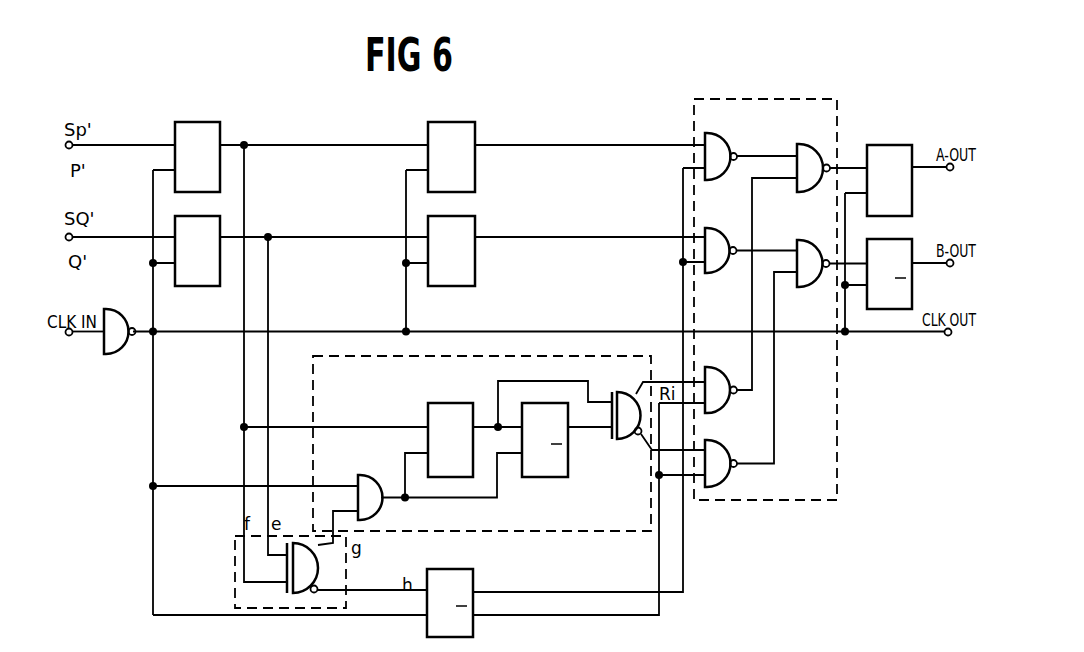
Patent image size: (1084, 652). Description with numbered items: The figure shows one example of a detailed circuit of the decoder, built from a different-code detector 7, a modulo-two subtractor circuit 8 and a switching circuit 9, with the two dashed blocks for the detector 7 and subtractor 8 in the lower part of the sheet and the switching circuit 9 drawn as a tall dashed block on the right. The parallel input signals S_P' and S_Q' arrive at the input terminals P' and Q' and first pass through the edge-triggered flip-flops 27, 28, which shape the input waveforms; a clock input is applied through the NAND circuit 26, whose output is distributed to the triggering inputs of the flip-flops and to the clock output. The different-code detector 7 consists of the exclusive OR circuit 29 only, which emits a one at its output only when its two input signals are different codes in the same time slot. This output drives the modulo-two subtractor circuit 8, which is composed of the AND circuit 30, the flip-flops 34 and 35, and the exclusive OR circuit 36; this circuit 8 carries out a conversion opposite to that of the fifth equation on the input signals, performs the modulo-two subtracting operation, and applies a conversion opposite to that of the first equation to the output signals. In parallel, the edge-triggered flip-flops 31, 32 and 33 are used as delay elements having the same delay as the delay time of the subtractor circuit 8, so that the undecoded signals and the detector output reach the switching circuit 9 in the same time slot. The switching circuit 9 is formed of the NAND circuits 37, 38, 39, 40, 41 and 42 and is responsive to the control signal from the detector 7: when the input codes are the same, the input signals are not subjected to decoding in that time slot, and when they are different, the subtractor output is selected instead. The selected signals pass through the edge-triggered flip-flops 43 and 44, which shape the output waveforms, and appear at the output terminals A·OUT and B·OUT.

The different-code detector 7 is at (235, 545).
The modulo-2 subtractor circuit 8 is at (313, 368).
The switching circuit 9 is at (797, 500).
The NAND circuit 26 is at (122, 299).
The edge-triggered flip-flop 27 is at (192, 122).
The edge-triggered flip-flop 28 is at (192, 286).
The exclusive OR circuit 29 is at (290, 593).
The AND circuit 30 is at (362, 475).
The edge-triggered flip-flop 31 is at (448, 122).
The edge-triggered flip-flop 32 is at (481, 214).
The edge-triggered flip-flop 33 is at (448, 569).
The edge-triggered flip-flop 34 is at (454, 393).
The edge-triggered flip-flop 35 is at (568, 470).
The exclusive OR circuit 36 is at (615, 392).
The NAND circuit 37 is at (723, 125).
The NAND circuit 38 is at (723, 220).
The NAND circuit 39 is at (717, 359).
The NAND circuit 40 is at (717, 432).
The NAND circuit 41 is at (807, 134).
The NAND circuit 42 is at (807, 230).
The edge-triggered flip-flop 43 is at (912, 155).
The edge-triggered flip-flop 44 is at (916, 237).